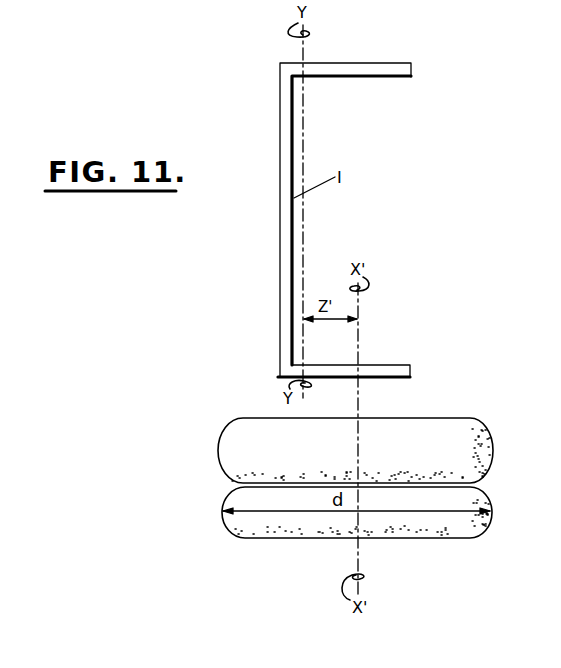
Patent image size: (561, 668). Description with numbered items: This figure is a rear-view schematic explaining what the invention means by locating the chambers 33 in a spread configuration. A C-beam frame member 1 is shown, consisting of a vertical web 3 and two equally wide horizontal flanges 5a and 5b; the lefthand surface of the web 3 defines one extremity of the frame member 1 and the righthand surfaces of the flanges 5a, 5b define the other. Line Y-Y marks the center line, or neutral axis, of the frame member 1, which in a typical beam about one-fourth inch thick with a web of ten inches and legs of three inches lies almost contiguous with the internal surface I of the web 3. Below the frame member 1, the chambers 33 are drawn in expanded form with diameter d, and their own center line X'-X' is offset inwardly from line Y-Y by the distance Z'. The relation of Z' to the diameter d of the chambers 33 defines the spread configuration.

The frame member 1 is at (278, 151).
The web 3 is at (285, 224).
The horizontal flange 5a is at (381, 71).
The horizontal flange 5b is at (384, 374).
The chambers 33 is at (495, 434).